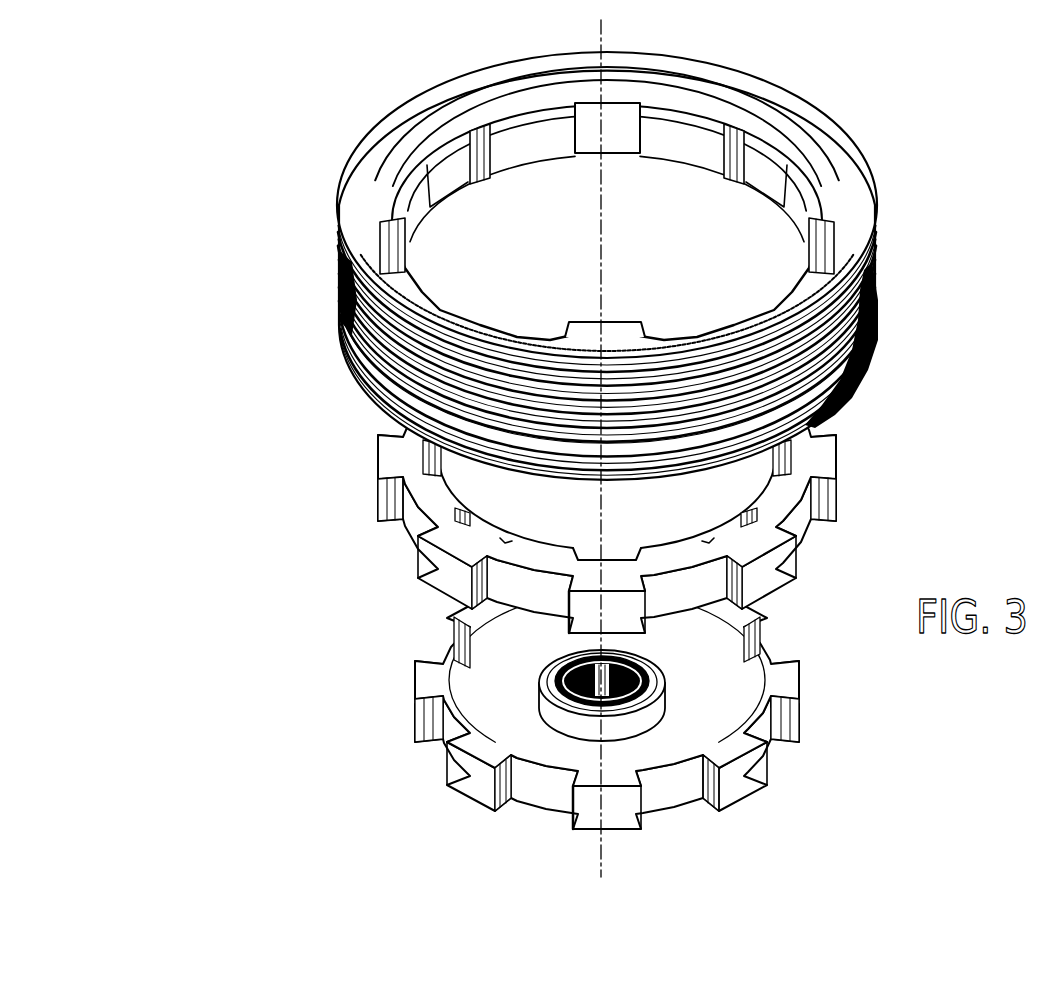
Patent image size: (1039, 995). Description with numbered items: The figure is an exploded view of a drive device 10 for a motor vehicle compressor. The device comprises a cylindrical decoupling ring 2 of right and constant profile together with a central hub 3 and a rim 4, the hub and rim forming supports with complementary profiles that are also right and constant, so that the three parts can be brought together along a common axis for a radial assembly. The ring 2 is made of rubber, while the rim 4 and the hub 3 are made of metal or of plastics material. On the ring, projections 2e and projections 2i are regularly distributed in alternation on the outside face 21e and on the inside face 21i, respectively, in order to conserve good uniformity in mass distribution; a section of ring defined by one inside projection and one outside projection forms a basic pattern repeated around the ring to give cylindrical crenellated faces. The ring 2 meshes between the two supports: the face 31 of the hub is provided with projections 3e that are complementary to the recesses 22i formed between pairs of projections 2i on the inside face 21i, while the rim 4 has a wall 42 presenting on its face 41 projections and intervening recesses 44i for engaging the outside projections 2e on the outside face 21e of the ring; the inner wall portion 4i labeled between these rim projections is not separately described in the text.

The drive device 10 is at (270, 530).
The rim 4 is at (920, 253).
The face of the rim 41 is at (620, 155).
The wall of the rim 42 is at (538, 172).
The recesses of the rim 44i is at (448, 173).
The inner wall segment of nut ring 4i is at (698, 163).
The decoupling ring 2 is at (873, 472).
The outside projections 2e is at (447, 583).
The outside face of the ring 21e is at (410, 533).
The inside projections 2i is at (547, 547).
The inside face of the ring 21i is at (720, 533).
The recesses of the ring 22i is at (485, 537).
The central hub 3 is at (814, 746).
The hub projections 3e is at (463, 782).
The face of the hub 31 is at (677, 797).